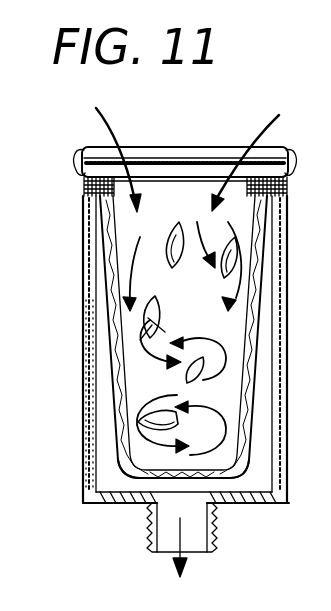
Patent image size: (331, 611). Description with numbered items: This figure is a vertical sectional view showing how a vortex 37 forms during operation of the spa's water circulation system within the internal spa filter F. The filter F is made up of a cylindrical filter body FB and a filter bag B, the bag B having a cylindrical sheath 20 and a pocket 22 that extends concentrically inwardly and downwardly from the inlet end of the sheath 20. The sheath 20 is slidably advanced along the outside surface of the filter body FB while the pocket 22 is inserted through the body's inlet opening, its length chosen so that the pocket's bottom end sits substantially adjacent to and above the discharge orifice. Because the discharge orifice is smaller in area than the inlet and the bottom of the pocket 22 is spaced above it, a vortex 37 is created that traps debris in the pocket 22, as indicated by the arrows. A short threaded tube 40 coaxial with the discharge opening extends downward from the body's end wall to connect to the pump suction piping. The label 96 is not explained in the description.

The cylindrical sheath 20 is at (84, 196).
The internal spa filter F is at (83, 257).
The pocket 22 is at (84, 328).
The filter body FB is at (83, 428).
The filter bag B is at (120, 458).
The short tube 40 is at (146, 528).
The flames 96 is at (187, 311).
The vortex 37 is at (182, 338).